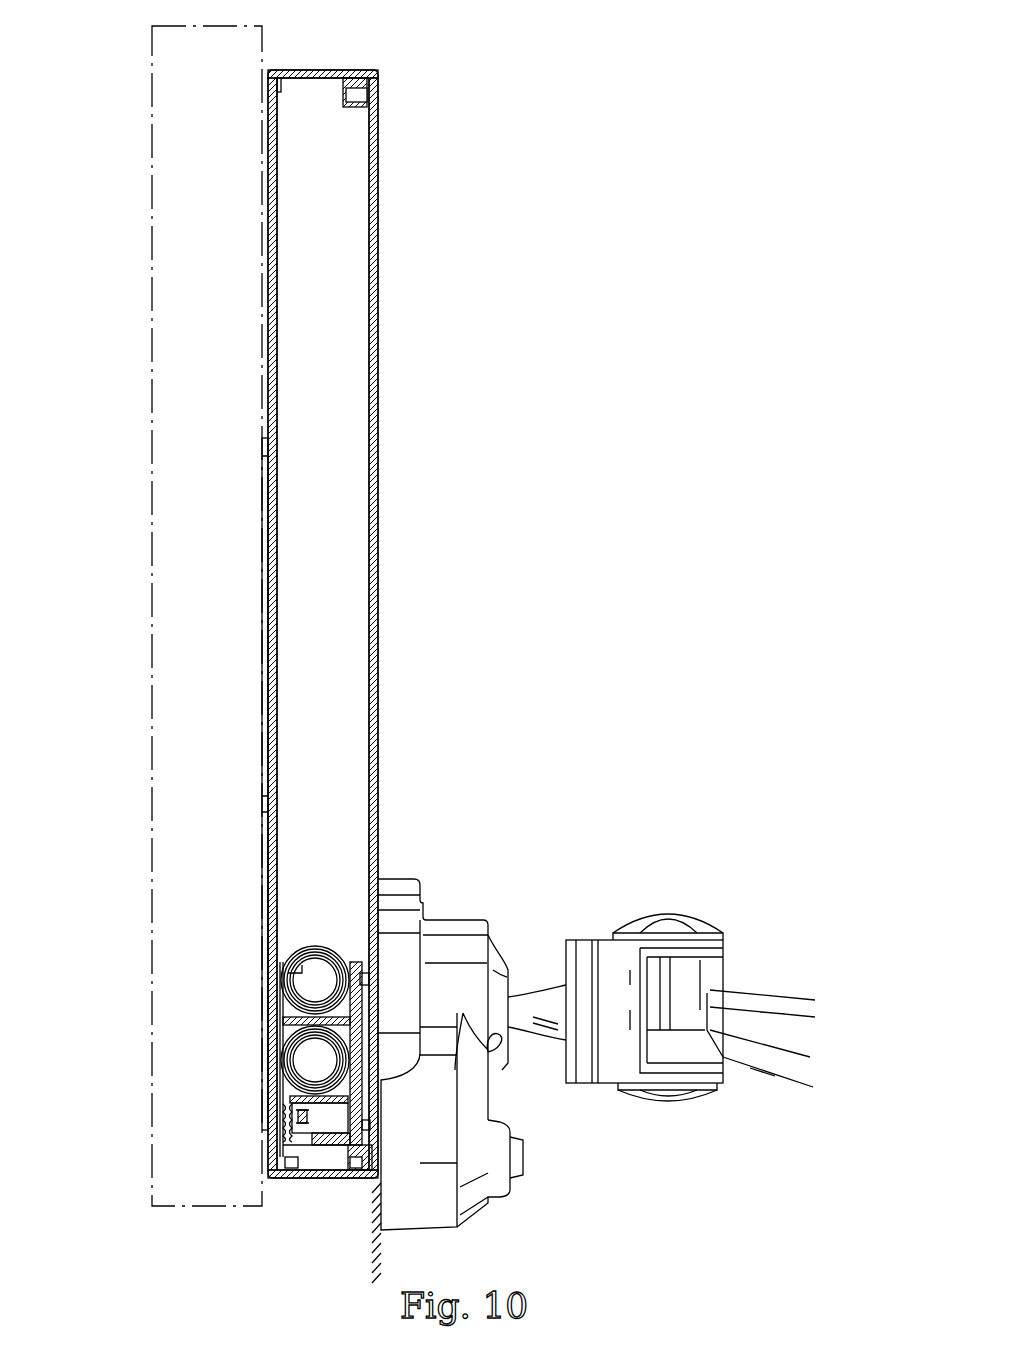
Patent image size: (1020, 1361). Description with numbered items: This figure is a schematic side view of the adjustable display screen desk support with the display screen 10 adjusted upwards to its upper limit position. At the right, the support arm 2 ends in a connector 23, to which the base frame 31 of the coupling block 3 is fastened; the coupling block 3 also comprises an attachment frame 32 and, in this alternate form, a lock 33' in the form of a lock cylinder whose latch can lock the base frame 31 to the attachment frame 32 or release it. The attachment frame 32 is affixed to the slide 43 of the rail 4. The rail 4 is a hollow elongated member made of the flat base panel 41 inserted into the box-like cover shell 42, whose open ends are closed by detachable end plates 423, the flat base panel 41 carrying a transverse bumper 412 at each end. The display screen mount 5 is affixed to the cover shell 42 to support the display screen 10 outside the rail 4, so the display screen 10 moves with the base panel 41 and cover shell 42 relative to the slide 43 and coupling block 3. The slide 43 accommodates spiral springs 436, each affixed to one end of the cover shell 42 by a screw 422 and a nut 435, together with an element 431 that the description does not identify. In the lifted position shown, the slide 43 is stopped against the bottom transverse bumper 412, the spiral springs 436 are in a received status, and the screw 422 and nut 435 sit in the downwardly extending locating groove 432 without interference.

The display screen 10 is at (146, 700).
The display screen mount 5 is at (266, 572).
The rail 4 is at (319, 640).
The flat base panel 41 is at (373, 218).
The cover shell 42 is at (270, 408).
The end plate 423 is at (343, 70).
The transverse bumper 412 is at (367, 82).
The slide 43 is at (276, 1055).
The roller 431 is at (285, 1013).
The spiral spring 436 is at (281, 972).
The screw 422 is at (300, 1120).
The nut 435 is at (284, 1138).
The locating groove 432 is at (276, 1157).
The coupling block 3 is at (493, 1033).
The attachment frame 32 is at (402, 880).
The base frame 31 is at (492, 932).
The lock 33' is at (559, 1192).
The connector 23 is at (540, 1000).
The support arm 2 is at (776, 998).